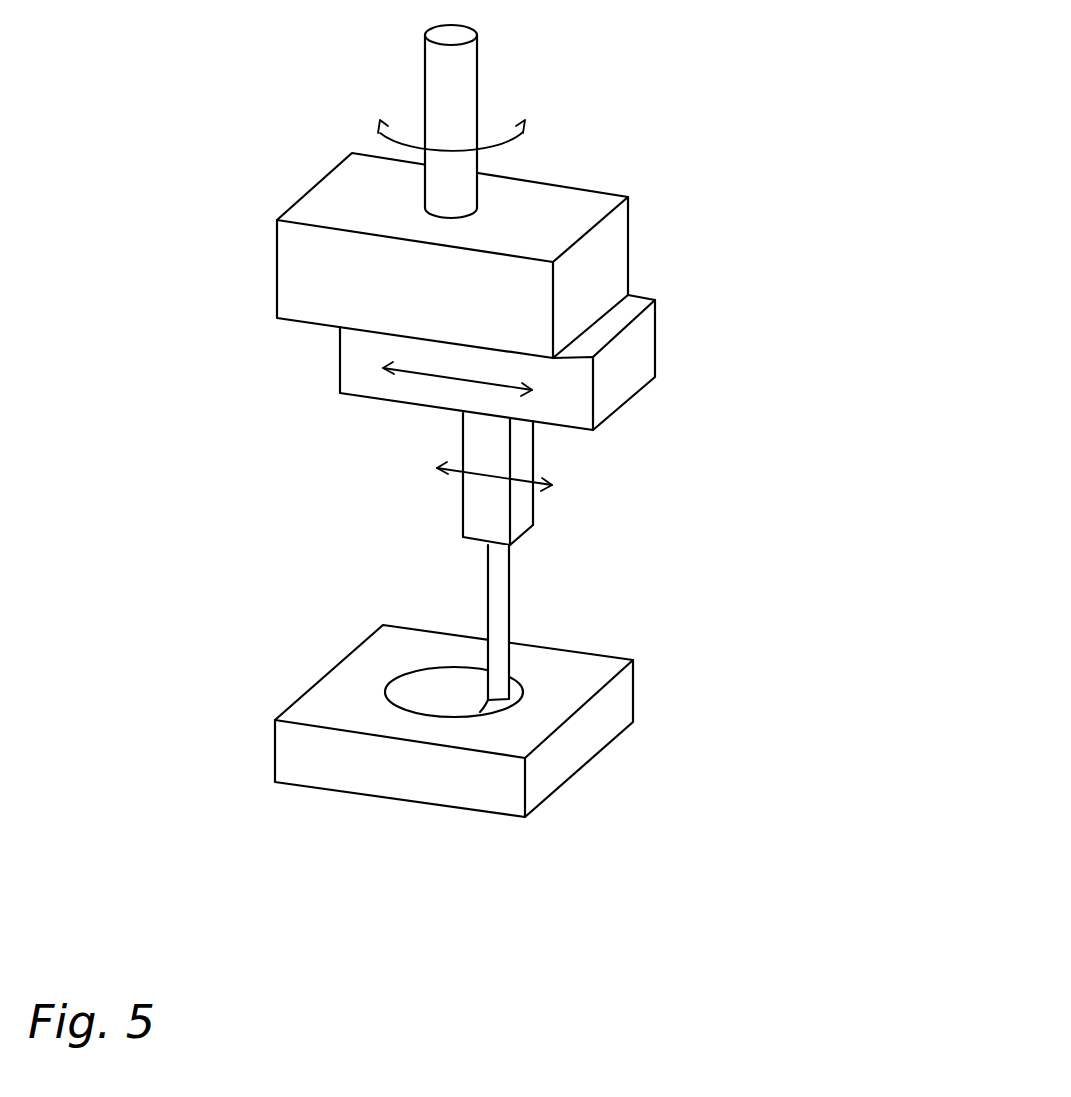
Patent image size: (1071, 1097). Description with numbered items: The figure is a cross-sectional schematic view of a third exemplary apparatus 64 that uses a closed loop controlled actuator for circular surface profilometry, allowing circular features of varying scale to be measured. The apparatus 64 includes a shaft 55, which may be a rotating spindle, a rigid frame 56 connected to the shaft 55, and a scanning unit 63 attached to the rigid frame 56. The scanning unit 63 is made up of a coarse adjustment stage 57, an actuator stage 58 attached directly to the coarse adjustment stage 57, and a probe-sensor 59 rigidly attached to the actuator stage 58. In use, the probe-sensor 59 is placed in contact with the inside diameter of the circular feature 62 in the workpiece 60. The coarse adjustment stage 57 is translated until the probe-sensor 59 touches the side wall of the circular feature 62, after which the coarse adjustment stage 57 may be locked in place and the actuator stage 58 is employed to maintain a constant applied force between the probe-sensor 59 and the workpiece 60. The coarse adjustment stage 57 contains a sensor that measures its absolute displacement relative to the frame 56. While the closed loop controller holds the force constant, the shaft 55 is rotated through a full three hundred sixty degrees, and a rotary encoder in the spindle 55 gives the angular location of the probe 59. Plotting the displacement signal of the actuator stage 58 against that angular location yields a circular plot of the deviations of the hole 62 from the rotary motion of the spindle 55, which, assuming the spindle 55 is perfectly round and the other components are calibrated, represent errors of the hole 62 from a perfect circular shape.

The shaft 55 is at (452, 115).
The rigid frame 56 is at (605, 277).
The coarse adjustment stage 57 is at (620, 377).
The actuator stage 58 is at (527, 518).
The probe-sensor 59 is at (497, 618).
The workpiece 60 is at (597, 727).
The circular feature 62 is at (405, 687).
The scanning unit 63 is at (352, 455).
The apparatus 64 is at (65, 120).